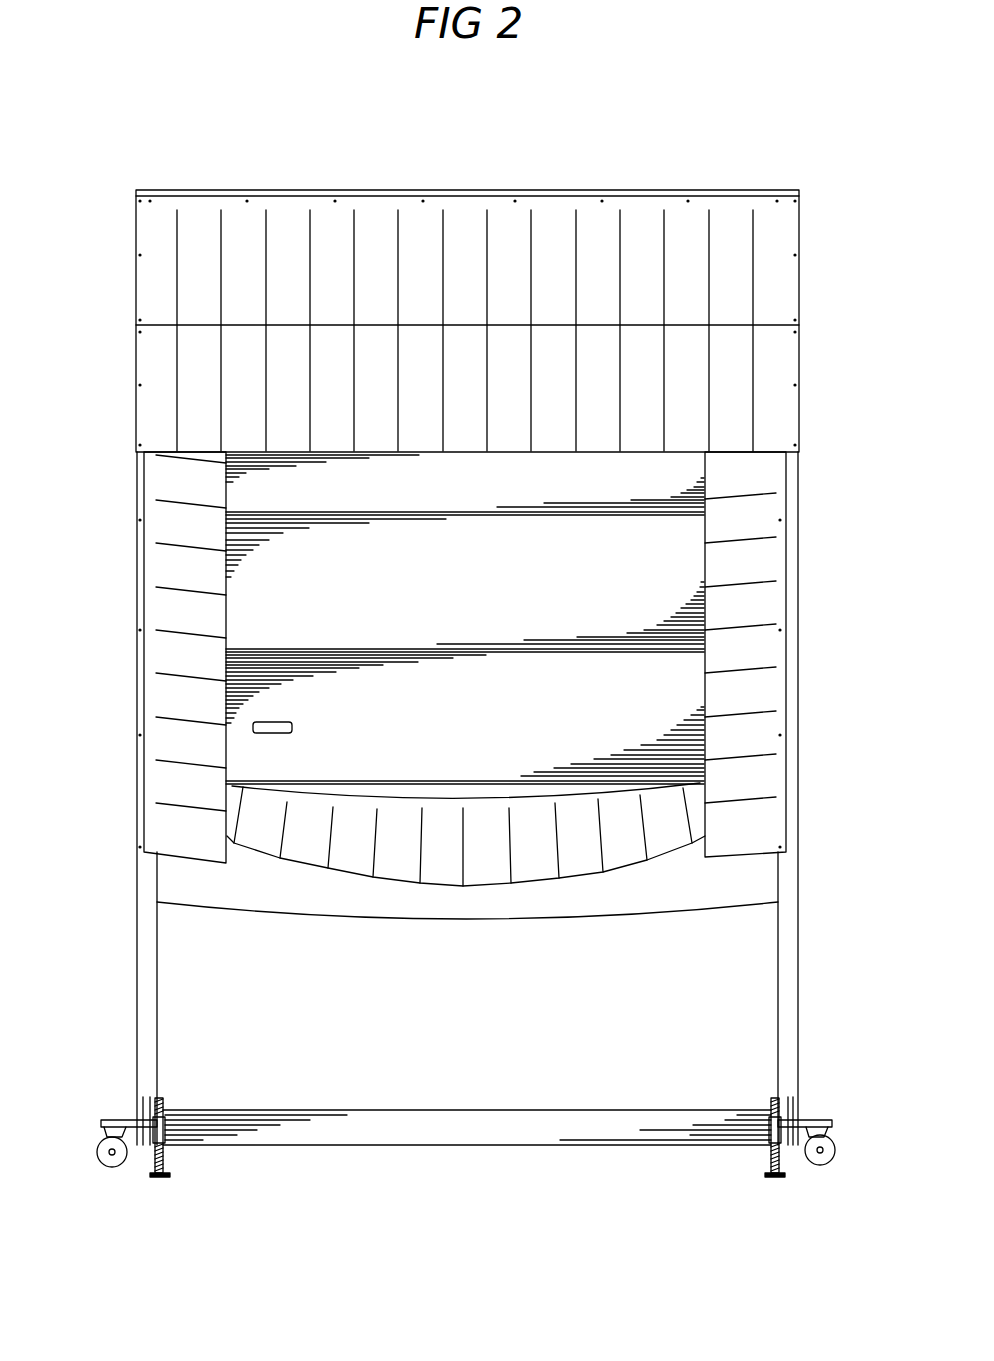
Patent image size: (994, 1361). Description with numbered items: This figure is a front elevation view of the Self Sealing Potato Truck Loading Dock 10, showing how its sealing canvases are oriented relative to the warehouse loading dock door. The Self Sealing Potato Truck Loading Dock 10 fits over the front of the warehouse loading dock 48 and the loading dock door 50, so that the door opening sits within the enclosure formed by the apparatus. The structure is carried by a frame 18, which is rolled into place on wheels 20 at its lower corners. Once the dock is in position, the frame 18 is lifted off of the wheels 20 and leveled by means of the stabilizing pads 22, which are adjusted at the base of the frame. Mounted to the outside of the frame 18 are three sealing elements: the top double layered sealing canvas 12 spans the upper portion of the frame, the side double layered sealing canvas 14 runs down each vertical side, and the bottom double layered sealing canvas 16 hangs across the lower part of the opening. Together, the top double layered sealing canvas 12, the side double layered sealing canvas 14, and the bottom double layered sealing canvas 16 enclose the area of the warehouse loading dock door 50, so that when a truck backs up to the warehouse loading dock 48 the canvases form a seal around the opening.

The Self Sealing Potato Truck Loading Dock 10 is at (427, 188).
The top double layered sealing canvas 12 is at (515, 290).
The side double layered sealing canvas 14 is at (186, 538).
The bottom double layered sealing canvas 16 is at (463, 888).
The frame 18 is at (777, 1029).
The wheels 20 is at (803, 1158).
The stabilizing pads 22 is at (770, 1168).
The warehouse loading dock 48 is at (365, 788).
The loading dock door 50 is at (520, 690).